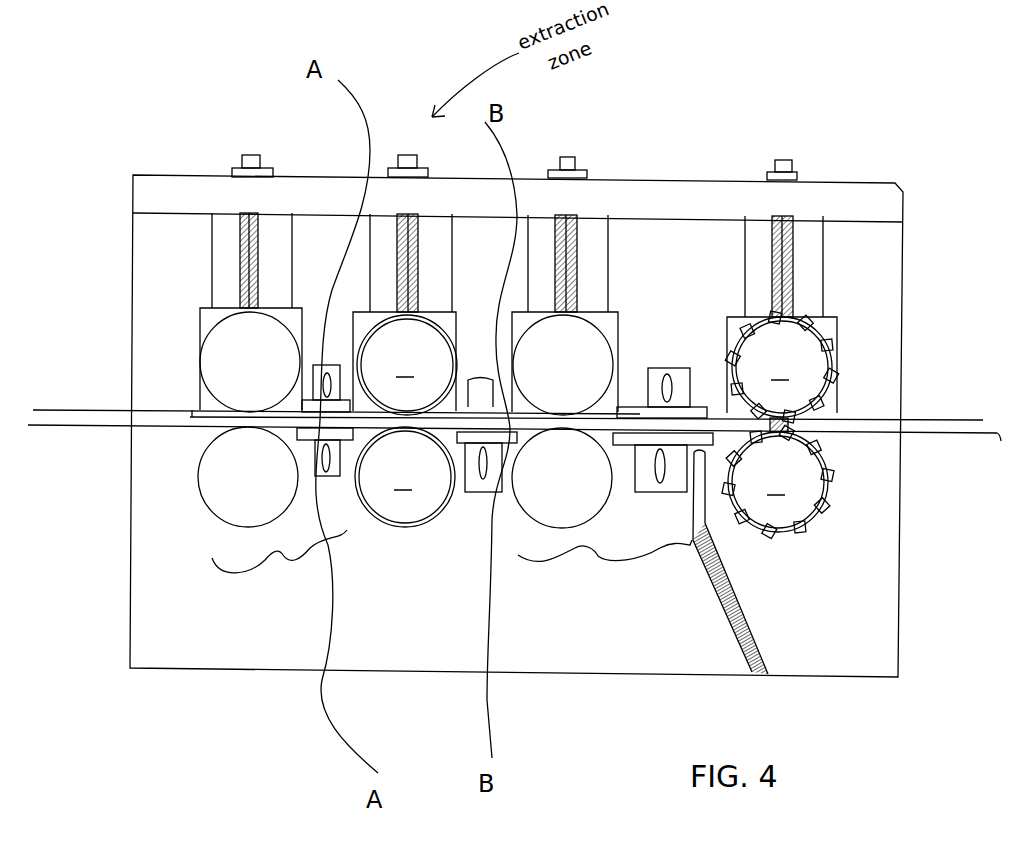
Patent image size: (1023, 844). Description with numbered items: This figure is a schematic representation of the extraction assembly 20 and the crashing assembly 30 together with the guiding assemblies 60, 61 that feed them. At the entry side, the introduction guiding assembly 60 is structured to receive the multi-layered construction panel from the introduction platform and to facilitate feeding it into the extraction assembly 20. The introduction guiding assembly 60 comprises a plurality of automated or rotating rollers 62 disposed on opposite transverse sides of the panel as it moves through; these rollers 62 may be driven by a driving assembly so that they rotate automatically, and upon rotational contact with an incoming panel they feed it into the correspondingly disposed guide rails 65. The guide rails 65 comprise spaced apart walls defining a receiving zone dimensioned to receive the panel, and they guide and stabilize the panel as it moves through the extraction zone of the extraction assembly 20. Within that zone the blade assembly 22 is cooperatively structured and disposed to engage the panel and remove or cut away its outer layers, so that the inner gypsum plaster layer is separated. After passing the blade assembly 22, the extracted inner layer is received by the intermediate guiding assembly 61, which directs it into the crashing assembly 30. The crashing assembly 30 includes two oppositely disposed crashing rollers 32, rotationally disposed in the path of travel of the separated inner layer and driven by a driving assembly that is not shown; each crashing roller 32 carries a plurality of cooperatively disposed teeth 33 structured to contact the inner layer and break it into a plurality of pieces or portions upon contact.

The extraction assembly 20 is at (389, 597).
The blade assembly 22 is at (406, 421).
The crashing assembly 30 is at (872, 307).
The crashing roller 32 is at (780, 424).
The teeth 33 is at (838, 352).
The introduction guiding assembly 60 is at (279, 562).
The intermediate guiding assembly 61 is at (605, 569).
The guiding rollers 62 is at (217, 360).
The guide rails 65 is at (333, 345).